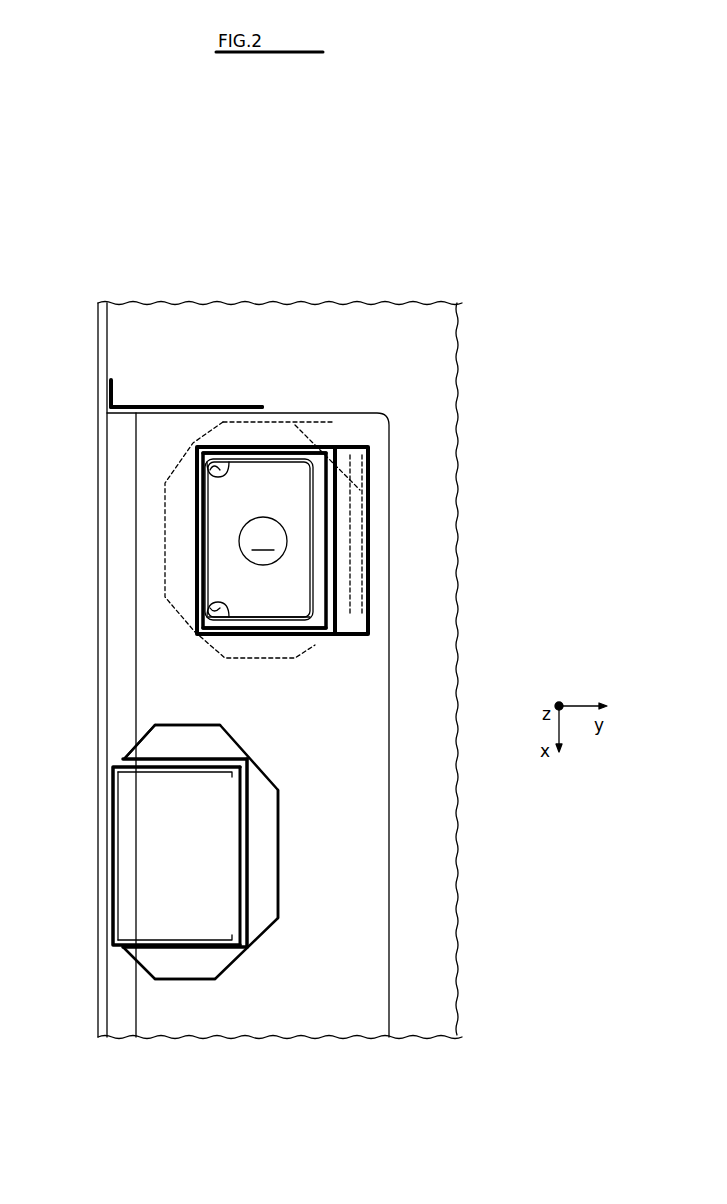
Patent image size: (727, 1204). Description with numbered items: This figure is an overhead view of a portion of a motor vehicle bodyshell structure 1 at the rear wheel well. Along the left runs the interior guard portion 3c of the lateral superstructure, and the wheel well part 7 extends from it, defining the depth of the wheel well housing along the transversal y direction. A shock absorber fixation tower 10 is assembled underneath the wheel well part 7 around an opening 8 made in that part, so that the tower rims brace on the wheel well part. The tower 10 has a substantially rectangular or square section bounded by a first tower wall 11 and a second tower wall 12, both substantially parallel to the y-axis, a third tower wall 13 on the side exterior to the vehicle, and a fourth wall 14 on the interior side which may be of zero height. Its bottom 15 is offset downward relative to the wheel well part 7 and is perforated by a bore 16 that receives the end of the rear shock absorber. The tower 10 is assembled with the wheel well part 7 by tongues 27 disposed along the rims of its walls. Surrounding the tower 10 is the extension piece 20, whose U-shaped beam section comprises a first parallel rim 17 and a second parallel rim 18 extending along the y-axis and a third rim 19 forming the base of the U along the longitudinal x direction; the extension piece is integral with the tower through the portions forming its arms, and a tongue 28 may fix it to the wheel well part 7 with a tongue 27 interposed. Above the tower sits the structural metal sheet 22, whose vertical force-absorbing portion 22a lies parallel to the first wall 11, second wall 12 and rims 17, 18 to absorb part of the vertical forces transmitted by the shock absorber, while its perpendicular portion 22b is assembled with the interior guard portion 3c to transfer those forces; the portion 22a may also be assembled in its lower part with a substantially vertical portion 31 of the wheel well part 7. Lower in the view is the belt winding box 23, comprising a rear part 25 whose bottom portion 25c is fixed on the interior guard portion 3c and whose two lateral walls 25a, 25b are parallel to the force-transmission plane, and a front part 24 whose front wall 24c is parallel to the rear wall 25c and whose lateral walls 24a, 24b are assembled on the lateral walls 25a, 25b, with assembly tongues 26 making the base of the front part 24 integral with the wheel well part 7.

The motor vehicle bodyshell structure 1 is at (115, 285).
The interior guard portion 3c is at (101, 491).
The wheel well part 7 is at (371, 418).
The opening 8 is at (275, 457).
The shock absorber fixation tower 10 is at (340, 606).
The first tower wall 11 is at (210, 475).
The second tower wall 12 is at (248, 443).
The third tower wall 13 is at (210, 561).
The fourth wall 14 is at (300, 551).
The bottom 15 is at (307, 630).
The bore 16 is at (263, 541).
The first parallel rim 17 is at (285, 608).
The second parallel rim 18 is at (302, 453).
The third rim 19 is at (340, 581).
The extension piece 20 is at (370, 522).
The structural metal sheet 22 is at (153, 380).
The force-absorbing portion 22a is at (152, 404).
The portion 22b is at (106, 402).
The belt winding box 23 is at (125, 748).
The front part 24 is at (283, 826).
The lateral wall 24a is at (222, 945).
The lateral wall 24b is at (214, 769).
The front wall 24c is at (248, 856).
The rear part 25 is at (106, 893).
The lateral wall 25a is at (114, 945).
The lateral wall 25b is at (114, 766).
The bottom portion 25c is at (113, 858).
The assembly tongues 26 is at (189, 726).
The tongues 27 is at (355, 493).
The tongue 28 is at (357, 462).
The substantially vertical portion 31 is at (346, 419).